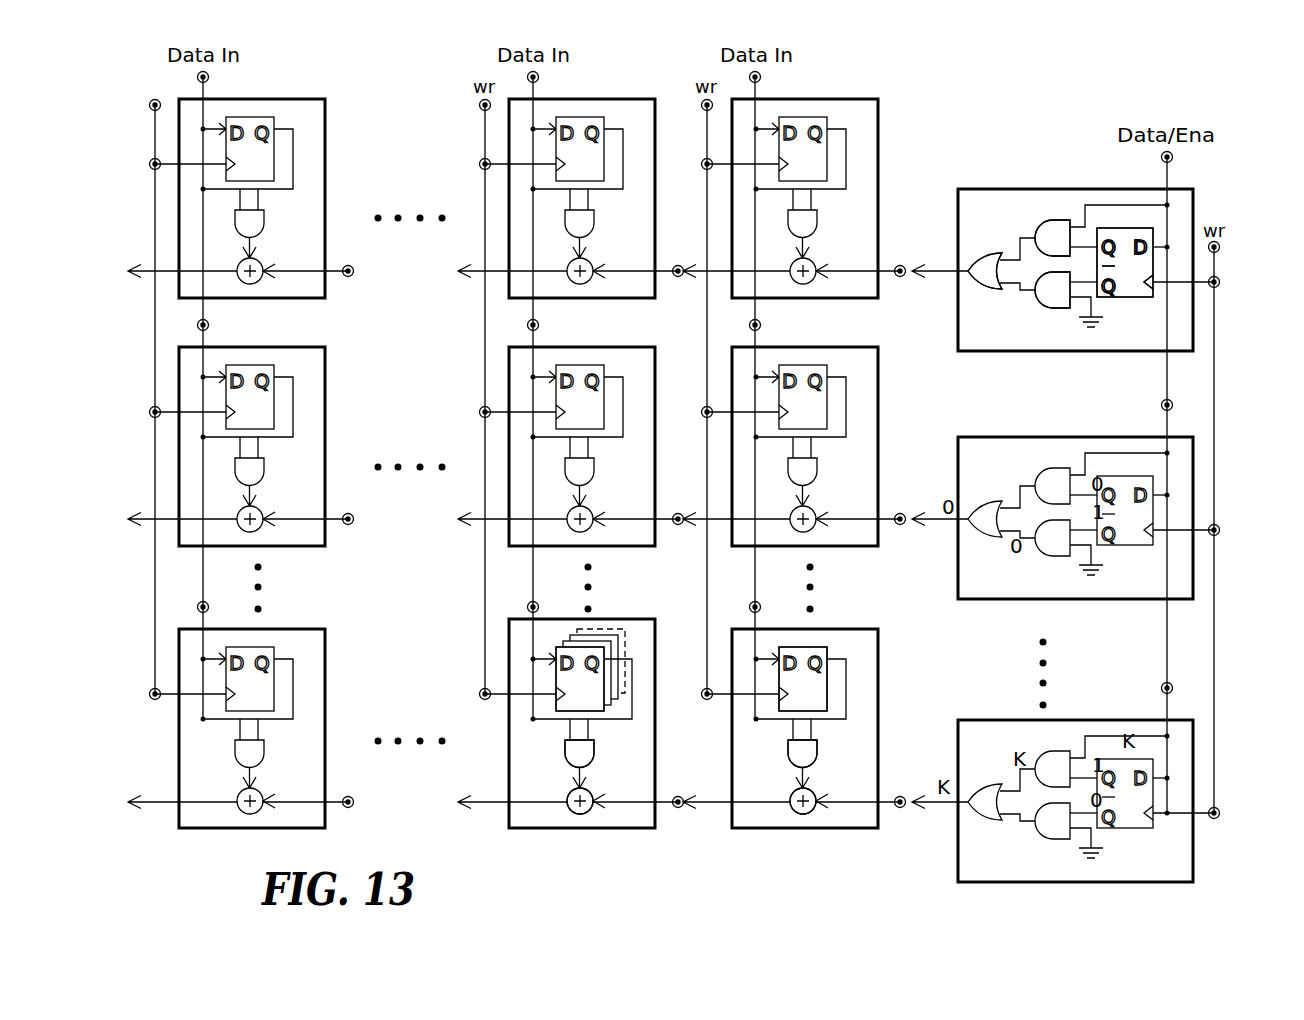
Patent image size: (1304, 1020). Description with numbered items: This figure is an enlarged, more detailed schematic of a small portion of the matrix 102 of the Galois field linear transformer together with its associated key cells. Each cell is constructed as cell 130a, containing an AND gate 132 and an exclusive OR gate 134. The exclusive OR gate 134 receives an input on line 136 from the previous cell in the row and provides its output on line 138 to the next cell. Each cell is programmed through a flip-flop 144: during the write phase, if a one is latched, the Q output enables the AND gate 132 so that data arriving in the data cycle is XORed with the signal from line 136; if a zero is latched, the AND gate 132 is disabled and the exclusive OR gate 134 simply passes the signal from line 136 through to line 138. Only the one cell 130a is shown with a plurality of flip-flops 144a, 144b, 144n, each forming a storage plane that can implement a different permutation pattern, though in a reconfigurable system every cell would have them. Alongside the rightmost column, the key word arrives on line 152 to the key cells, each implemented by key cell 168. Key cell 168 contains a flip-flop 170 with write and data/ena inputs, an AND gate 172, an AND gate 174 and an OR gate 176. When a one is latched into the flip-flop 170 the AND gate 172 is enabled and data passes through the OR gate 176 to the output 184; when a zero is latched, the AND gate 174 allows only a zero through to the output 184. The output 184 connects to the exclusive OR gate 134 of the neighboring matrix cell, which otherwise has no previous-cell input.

The matrix 102 is at (955, 112).
The cell 130a is at (805, 99).
The AND gate 132 is at (585, 752).
The exclusive OR gate 134 is at (593, 790).
The input line 136 is at (662, 805).
The output line 138 is at (538, 805).
The flip-flop 144 is at (598, 690).
The flip-flop 144a is at (612, 670).
The flip-flop 144b is at (617, 650).
The flip-flop 144n is at (608, 628).
The line 152 is at (1196, 188).
The key cell 168 is at (1195, 213).
The flip-flop 170 is at (1128, 228).
The AND gate 172 is at (1045, 221).
The AND gate 174 is at (1050, 306).
The OR gate 176 is at (977, 253).
The output 184 is at (898, 266).